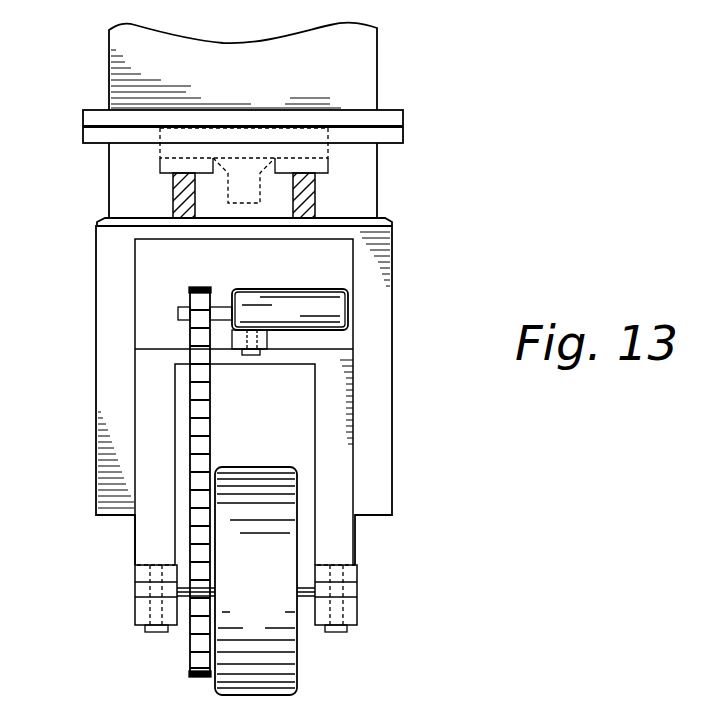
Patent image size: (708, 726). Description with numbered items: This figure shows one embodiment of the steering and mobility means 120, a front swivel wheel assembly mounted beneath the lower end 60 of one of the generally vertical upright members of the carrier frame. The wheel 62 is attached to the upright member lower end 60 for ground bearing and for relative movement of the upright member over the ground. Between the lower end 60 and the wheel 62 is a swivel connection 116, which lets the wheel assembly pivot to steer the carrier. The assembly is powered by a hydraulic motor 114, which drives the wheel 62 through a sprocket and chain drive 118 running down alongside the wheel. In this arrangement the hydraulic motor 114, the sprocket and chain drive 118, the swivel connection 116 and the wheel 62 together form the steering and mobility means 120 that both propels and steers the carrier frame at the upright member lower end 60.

The lower end 60 is at (377, 73).
The swivel connection 116 is at (328, 167).
The hydraulic motor 114 is at (332, 307).
The sprocket and chain drive 118 is at (190, 340).
The steering and mobility means 120 is at (393, 477).
The wheel 62 is at (297, 660).